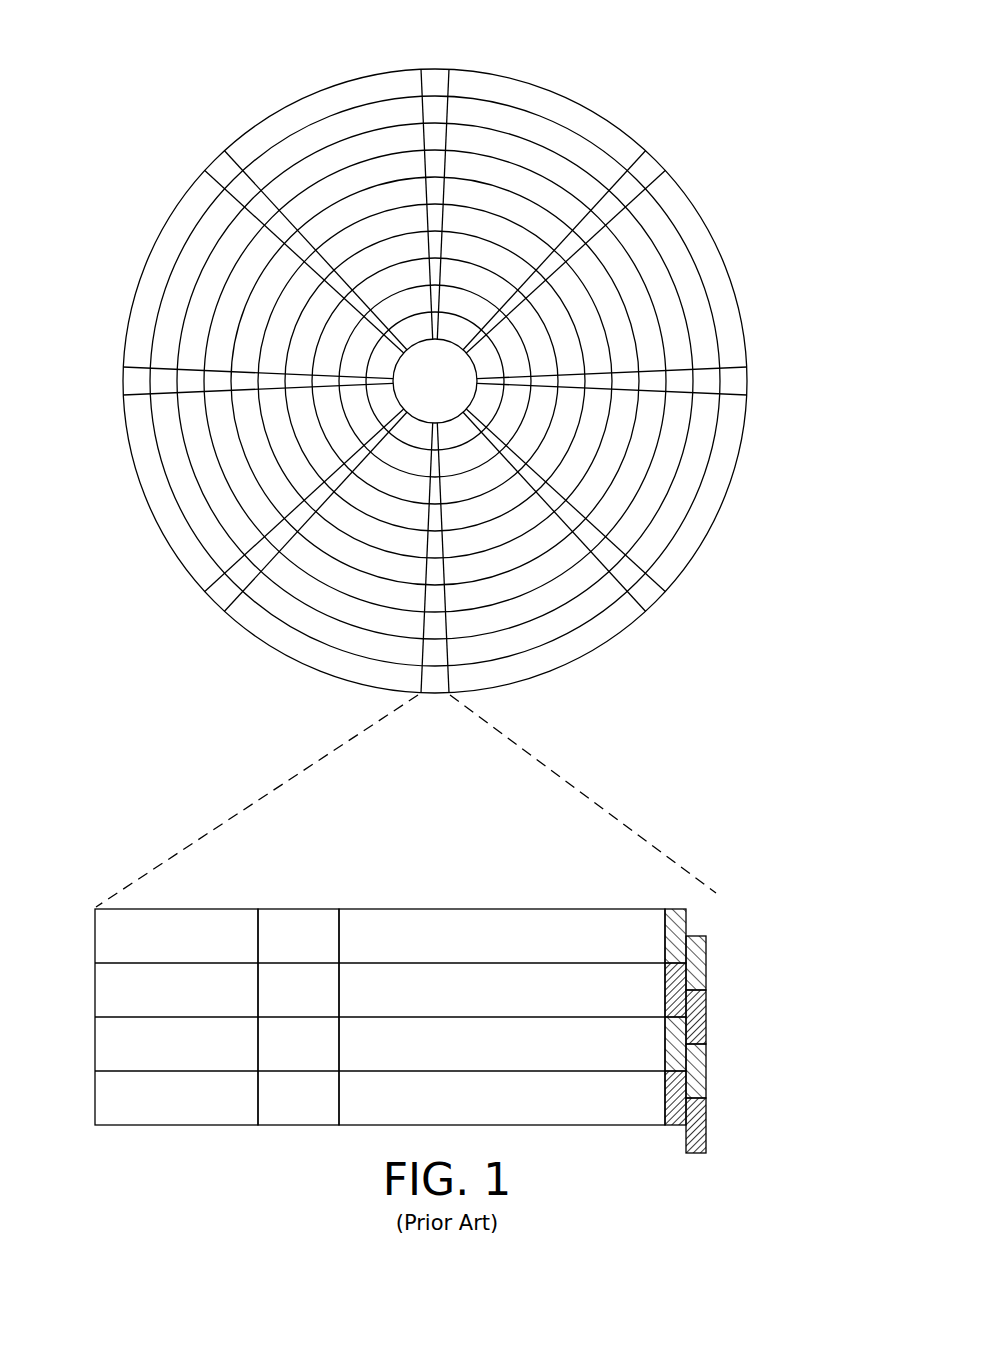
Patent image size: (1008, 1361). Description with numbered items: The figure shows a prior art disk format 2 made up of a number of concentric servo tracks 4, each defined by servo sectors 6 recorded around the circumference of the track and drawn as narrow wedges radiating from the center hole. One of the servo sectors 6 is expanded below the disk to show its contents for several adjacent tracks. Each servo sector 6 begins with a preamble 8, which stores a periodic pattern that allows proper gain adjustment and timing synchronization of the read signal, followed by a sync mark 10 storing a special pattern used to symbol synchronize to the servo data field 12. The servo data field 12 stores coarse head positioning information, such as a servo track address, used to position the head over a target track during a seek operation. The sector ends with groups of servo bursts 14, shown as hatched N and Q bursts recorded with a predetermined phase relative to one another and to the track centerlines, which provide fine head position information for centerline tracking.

The disk format 2 is at (198, 70).
The servo tracks 4 is at (562, 115).
The servo sectors 6 is at (290, 762).
The preamble 8 is at (185, 907).
The sync mark 10 is at (300, 907).
The servo data field 12 is at (487, 907).
The servo bursts 14 is at (708, 902).